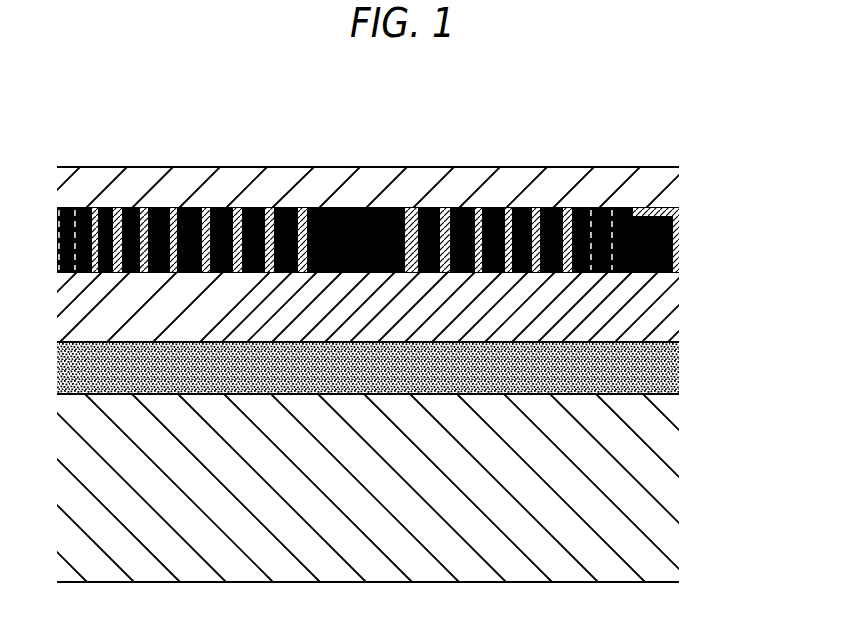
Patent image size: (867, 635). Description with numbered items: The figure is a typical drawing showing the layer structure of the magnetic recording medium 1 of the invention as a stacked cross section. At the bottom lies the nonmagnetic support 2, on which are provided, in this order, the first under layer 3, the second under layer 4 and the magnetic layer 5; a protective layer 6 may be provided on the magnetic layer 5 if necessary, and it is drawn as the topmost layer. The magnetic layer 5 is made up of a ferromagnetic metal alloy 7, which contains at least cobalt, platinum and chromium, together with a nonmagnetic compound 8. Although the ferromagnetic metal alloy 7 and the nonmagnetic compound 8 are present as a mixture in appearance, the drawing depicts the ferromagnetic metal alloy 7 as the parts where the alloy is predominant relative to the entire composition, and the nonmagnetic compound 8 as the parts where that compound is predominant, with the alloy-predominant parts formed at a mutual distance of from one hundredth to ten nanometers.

The magnetic recording medium 1 is at (173, 132).
The nonmagnetic support 2 is at (655, 497).
The first under layer 3 is at (657, 367).
The second under layer 4 is at (657, 302).
The magnetic layer 5 is at (677, 240).
The protective layer 6 is at (653, 187).
The ferromagnetic metal alloy 7 is at (325, 208).
The nonmagnetic compound 8 is at (413, 208).